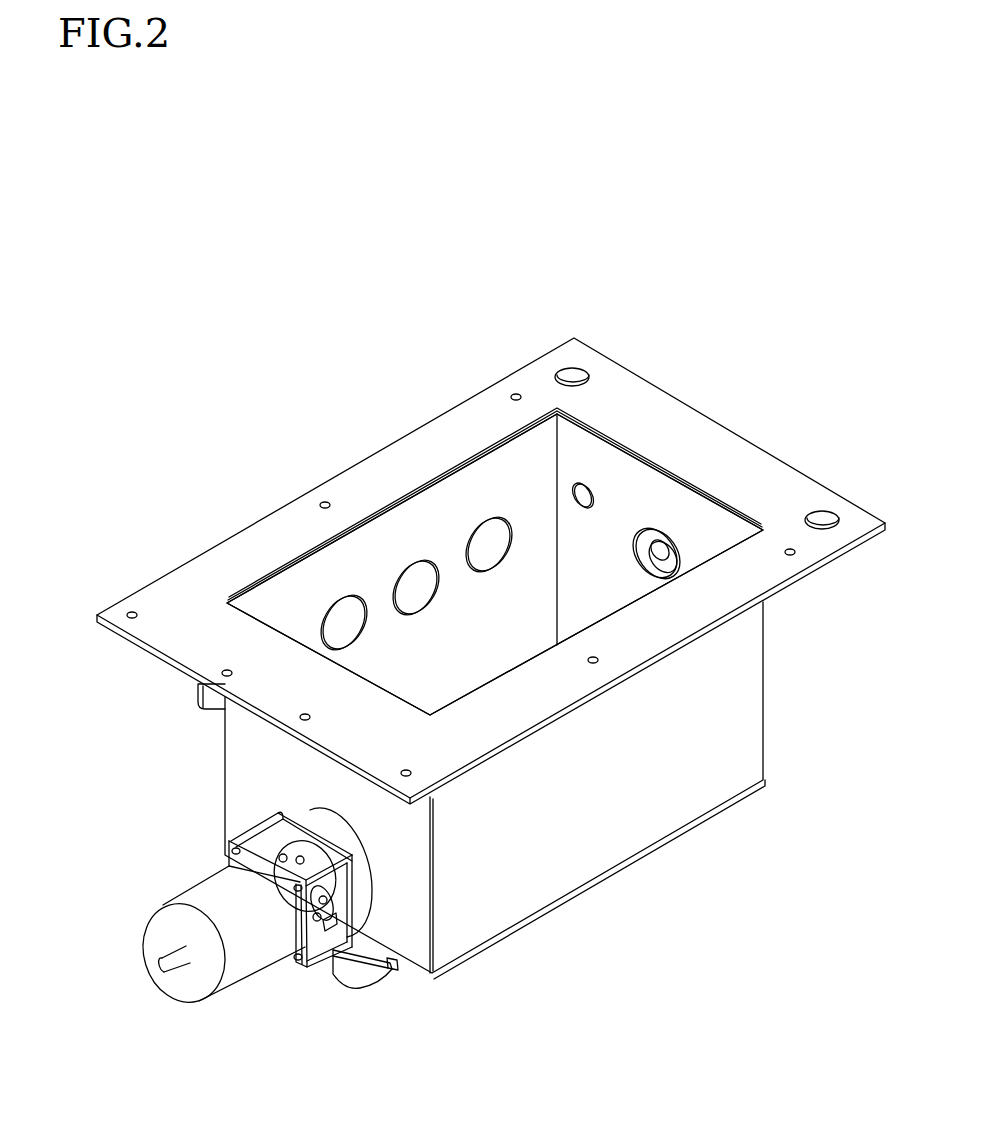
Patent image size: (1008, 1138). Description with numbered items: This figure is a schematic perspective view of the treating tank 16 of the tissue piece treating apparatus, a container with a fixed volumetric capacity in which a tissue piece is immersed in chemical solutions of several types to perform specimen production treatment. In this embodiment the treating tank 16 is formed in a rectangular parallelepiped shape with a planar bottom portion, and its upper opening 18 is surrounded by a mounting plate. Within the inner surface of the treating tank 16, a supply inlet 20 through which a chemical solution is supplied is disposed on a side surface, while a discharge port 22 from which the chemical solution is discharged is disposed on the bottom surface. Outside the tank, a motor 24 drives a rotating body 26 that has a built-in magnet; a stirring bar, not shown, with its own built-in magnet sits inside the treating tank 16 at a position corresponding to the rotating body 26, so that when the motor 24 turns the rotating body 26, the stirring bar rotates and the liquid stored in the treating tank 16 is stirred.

The treating tank 16 is at (680, 248).
The opening in mounting plate 18 is at (247, 578).
The supply inlet 20 is at (660, 562).
The discharge port 22 is at (370, 977).
The motor 24 is at (228, 910).
The rotating body 26 is at (297, 813).